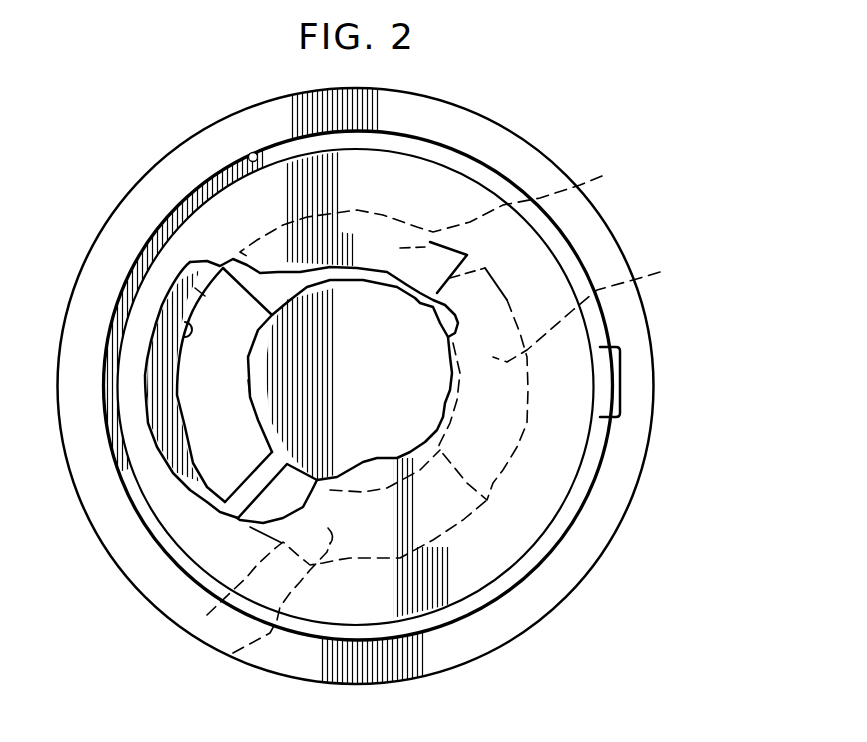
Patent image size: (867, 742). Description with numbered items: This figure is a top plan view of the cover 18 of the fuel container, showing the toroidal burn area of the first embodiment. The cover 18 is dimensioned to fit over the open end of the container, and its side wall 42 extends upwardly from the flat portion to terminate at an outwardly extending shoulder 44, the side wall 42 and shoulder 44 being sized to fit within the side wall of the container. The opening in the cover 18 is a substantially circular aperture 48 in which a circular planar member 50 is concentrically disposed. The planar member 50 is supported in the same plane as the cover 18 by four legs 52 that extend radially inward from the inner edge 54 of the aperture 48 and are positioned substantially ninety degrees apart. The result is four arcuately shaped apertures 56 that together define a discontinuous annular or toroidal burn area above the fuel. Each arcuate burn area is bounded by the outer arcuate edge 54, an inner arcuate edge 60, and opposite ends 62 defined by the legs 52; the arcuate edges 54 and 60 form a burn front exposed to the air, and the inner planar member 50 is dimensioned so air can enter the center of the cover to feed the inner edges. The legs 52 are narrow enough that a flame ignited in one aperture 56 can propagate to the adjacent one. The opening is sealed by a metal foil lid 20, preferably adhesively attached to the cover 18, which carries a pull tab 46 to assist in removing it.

The cover 18 is at (578, 145).
The lid 20 is at (463, 175).
The side wall 42 is at (251, 152).
The shoulder 44 is at (164, 148).
The pull tab 46 is at (620, 380).
The aperture 48 is at (195, 471).
The circular planar member 50 is at (383, 389).
The legs 52 is at (190, 262).
The inner edge of the aperture 54 is at (185, 329).
The arcuately shaped apertures 56 is at (218, 682).
The inner arcuate edge 60 is at (248, 396).
The opposite ends 62 is at (200, 292).